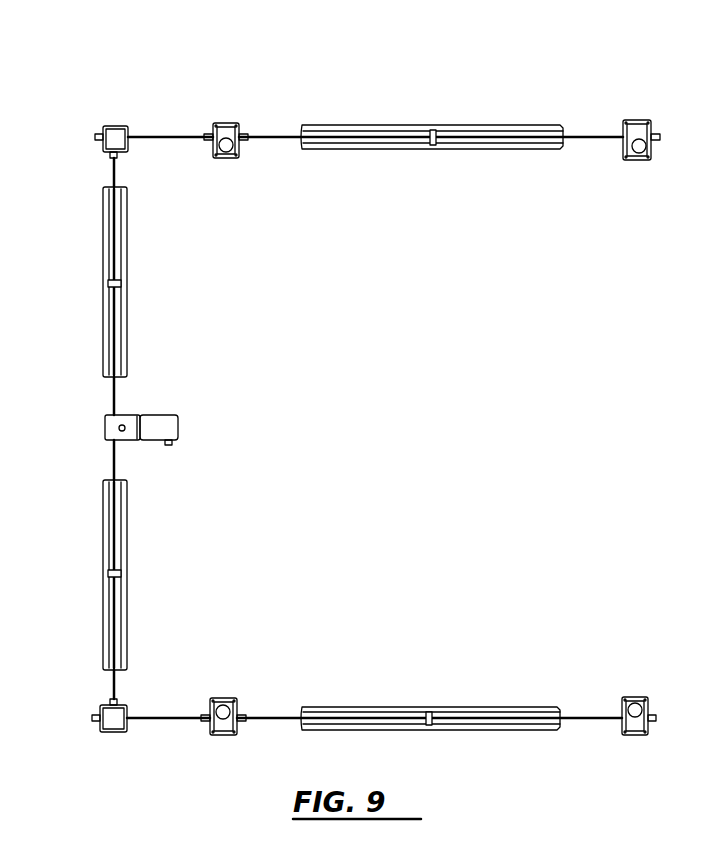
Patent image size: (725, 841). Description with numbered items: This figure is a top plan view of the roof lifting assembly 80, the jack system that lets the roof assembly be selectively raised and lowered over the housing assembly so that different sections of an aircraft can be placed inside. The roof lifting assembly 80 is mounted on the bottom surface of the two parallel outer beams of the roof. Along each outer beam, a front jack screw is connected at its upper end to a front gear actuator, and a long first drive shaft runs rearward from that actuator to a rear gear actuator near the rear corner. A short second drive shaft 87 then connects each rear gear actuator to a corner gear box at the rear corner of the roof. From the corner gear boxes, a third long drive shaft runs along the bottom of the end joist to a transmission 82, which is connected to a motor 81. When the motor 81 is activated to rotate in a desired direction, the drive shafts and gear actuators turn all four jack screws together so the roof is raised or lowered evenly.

The roof lifting assembly 80 is at (142, 92).
The motor 81 is at (165, 426).
The transmission 82 is at (105, 428).
The second drive shaft 87 is at (163, 719).